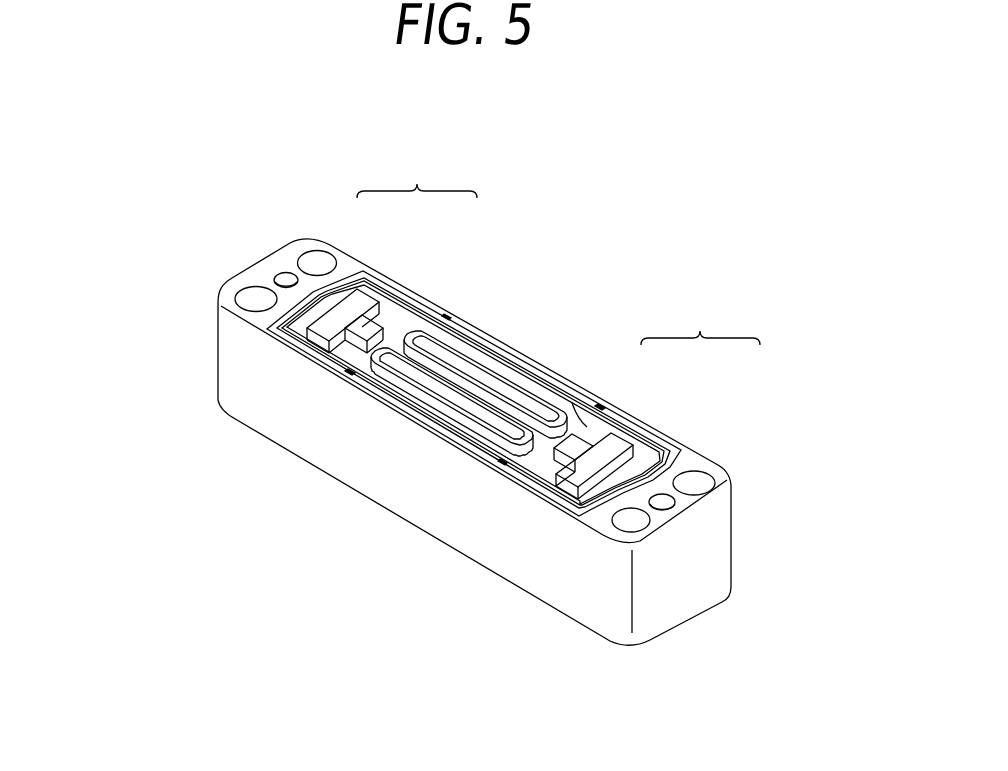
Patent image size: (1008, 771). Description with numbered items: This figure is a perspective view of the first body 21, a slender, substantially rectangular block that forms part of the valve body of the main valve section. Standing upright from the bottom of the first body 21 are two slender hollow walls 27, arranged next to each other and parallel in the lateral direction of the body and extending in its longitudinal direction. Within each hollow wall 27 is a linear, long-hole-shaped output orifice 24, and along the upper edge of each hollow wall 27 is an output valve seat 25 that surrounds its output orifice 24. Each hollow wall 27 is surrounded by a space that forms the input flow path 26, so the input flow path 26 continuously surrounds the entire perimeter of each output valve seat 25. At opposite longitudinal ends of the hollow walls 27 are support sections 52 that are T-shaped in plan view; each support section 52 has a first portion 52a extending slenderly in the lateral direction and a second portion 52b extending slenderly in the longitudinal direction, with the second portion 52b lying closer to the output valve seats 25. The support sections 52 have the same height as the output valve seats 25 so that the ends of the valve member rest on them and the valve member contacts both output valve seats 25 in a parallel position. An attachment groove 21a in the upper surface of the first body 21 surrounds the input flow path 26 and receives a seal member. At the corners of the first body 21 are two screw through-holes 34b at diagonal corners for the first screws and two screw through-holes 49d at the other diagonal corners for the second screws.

The first body 21 is at (378, 457).
The attachment groove 21a is at (267, 325).
The output orifices 24 is at (452, 397).
The output valve seats 25 is at (512, 420).
The input flow path 26 is at (572, 403).
The hollow walls 27 is at (535, 470).
The screw through-holes 34b is at (255, 297).
The screw through-holes 49d is at (317, 262).
The support sections 52 is at (535, 318).
The first portion 52a is at (370, 300).
The second portion 52b is at (380, 330).